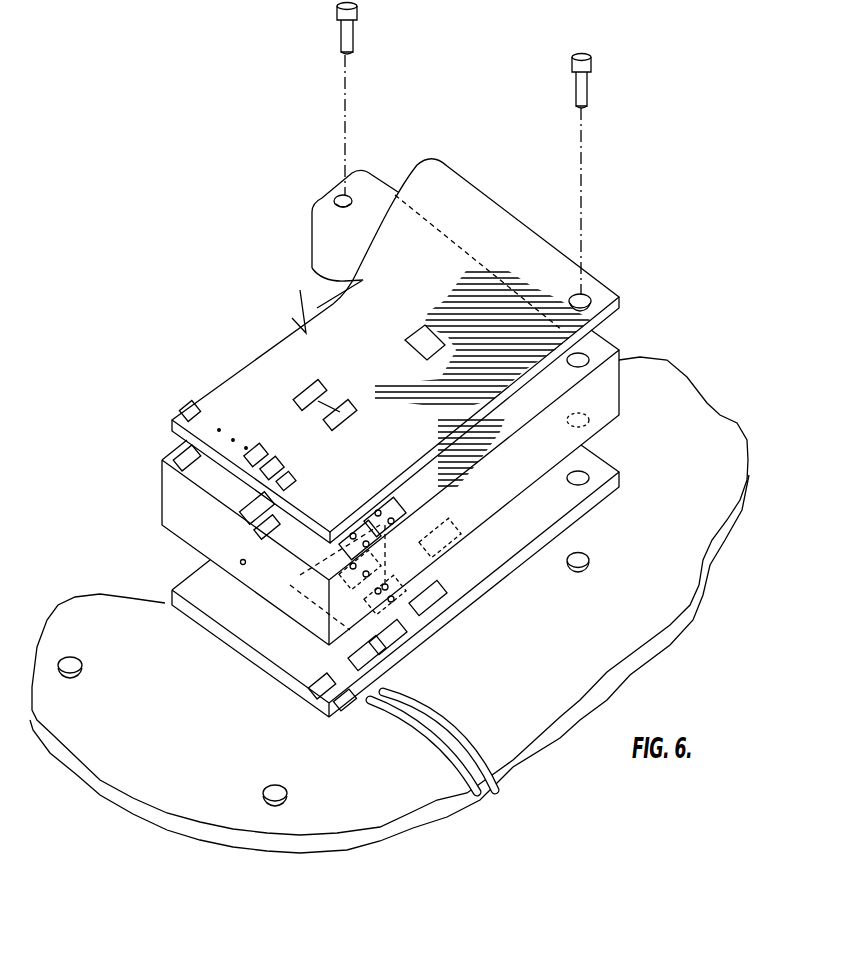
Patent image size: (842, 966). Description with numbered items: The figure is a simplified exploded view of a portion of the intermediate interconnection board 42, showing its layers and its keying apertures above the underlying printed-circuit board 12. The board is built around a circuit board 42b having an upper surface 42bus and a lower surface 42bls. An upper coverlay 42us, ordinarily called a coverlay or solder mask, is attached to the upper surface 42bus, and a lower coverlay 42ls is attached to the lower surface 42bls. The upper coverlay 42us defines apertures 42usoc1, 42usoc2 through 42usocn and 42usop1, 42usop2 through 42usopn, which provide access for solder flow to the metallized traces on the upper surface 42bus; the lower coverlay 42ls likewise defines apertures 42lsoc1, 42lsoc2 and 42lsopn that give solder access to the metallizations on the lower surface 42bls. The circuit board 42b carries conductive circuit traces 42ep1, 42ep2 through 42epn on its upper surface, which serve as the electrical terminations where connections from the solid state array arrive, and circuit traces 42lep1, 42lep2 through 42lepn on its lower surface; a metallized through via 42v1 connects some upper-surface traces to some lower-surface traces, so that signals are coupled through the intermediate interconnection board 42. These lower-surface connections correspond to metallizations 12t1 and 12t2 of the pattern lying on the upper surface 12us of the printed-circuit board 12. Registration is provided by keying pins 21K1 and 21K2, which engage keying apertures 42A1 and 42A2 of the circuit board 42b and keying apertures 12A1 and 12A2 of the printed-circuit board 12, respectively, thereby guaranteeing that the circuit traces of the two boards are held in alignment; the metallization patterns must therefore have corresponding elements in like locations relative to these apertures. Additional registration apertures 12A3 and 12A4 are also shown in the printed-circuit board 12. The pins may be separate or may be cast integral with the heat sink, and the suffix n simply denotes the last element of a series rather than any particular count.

The printed-circuit board 12 is at (411, 511).
The upper surface of printed-circuit board 12us is at (667, 597).
The keying aperture 12A1 is at (590, 556).
The keying aperture 12A2 is at (300, 300).
The registration aperture 12A3 is at (287, 789).
The registration aperture 12A4 is at (84, 662).
The metallization 12t1 is at (403, 718).
The metallization 12t2 is at (445, 716).
The keying pin 21K1 is at (585, 88).
The keying pin 21K2 is at (351, 38).
The intermediate interconnection board 42 is at (704, 514).
The upper coverlay 42us is at (448, 293).
The keying aperture 42A1 is at (588, 353).
The keying aperture 42A2 is at (346, 190).
The circuit board 42b is at (607, 386).
The upper surface of circuit board 42bus is at (580, 440).
The lower surface of circuit board 42bls is at (560, 523).
The lower coverlay 42ls is at (528, 548).
The upper coverlay aperture 42usop1 is at (333, 398).
The upper coverlay aperture 42usop2 is at (300, 392).
The upper coverlay aperture 42usopn is at (420, 343).
The upper coverlay aperture 42usoc1 is at (272, 458).
The upper coverlay aperture 42usoc2 is at (256, 445).
The upper coverlay aperture 42usocn is at (190, 400).
The conductive circuit trace 42ep1 is at (265, 522).
The conductive circuit trace 42ep2 is at (205, 540).
The conductive circuit trace 42epn is at (165, 455).
The circuit trace 42lep1 is at (385, 648).
The circuit trace 42lep2 is at (405, 627).
The circuit trace 42lepn is at (438, 535).
The lower coverlay aperture 42lsopn is at (445, 597).
The lower coverlay aperture 42lsoc1 is at (338, 696).
The lower coverlay aperture 42lsoc2 is at (352, 706).
The through via 42v1 is at (242, 565).